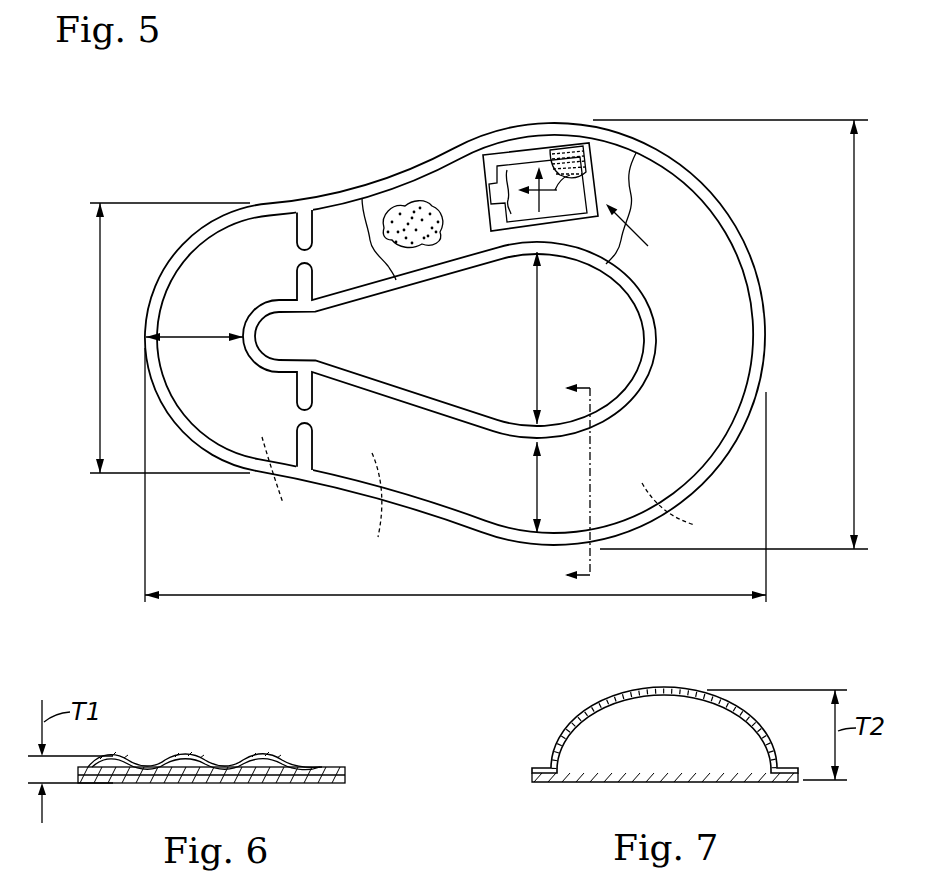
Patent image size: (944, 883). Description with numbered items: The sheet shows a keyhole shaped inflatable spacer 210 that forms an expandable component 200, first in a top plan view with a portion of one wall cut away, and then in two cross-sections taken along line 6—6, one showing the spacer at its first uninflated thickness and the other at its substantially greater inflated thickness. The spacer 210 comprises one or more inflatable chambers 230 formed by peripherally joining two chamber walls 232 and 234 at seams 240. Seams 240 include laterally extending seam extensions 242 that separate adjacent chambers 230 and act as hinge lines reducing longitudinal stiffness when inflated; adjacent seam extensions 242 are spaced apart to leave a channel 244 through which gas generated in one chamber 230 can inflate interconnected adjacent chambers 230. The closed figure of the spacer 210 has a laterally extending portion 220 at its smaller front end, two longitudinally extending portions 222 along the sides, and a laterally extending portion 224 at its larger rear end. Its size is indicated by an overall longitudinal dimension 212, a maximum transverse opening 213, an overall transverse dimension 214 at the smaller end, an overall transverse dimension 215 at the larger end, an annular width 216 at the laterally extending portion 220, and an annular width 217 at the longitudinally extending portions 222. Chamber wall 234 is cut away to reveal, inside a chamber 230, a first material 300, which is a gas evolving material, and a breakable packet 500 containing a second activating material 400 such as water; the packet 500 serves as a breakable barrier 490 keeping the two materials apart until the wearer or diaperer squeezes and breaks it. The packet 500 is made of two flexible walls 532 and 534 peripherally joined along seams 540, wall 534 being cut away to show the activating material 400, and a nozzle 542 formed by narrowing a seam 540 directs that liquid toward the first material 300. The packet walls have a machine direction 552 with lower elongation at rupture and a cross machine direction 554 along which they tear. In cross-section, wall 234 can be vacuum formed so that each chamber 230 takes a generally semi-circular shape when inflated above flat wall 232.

In FIG. 5, the expandable component 200 is at (722, 96).
In FIG. 5, the spacer 210 is at (752, 250).
In FIG. 5, the overall longitudinal dimension 212 is at (452, 594).
In FIG. 5, the maximum transverse opening 213 is at (540, 338).
In FIG. 5, the overall transverse dimension 214 is at (143, 338).
In FIG. 5, the overall transverse dimension 215 is at (856, 334).
In FIG. 5, the annular width 216 is at (200, 336).
In FIG. 5, the annular width 217 is at (540, 487).
In FIG. 5, the laterally extending portion 220 is at (160, 370).
In FIG. 5, the longitudinally extending portions 222 is at (440, 180).
In FIG. 5, the laterally extending portion 224 is at (730, 299).
In FIG. 5, the inflatable chambers 230 is at (500, 498).
In FIG. 6, the inflatable chambers 230 is at (183, 771).
In FIG. 7, the inflatable chambers 230 is at (607, 738).
In FIG. 5, the chamber wall 232 is at (606, 152).
In FIG. 6, the chamber wall 232 is at (250, 782).
In FIG. 7, the chamber wall 232 is at (633, 778).
In FIG. 5, the chamber wall 234 is at (700, 217).
In FIG. 6, the chamber wall 234 is at (293, 756).
In FIG. 7, the chamber wall 234 is at (637, 688).
In FIG. 5, the seams 240 is at (375, 285).
In FIG. 6, the seams 240 is at (75, 797).
In FIG. 7, the seams 240 is at (522, 795).
In FIG. 5, the seam extensions 242 is at (308, 235).
In FIG. 5, the channel 244 is at (303, 256).
In FIG. 5, the first material 300 is at (410, 192).
In FIG. 5, the second activating material 400 is at (607, 157).
In FIG. 5, the breakable barrier 490 is at (647, 233).
In FIG. 5, the breakable packet 500 is at (520, 150).
In FIG. 5, the flexible wall 532 is at (557, 150).
In FIG. 5, the flexible wall 534 is at (528, 215).
In FIG. 5, the seams 540 is at (503, 168).
In FIG. 5, the nozzle 542 is at (484, 180).
In FIG. 5, the direction 552 is at (560, 190).
In FIG. 5, the direction 554 is at (556, 205).
In FIG. 5, the section line 6— 6 is at (568, 481).